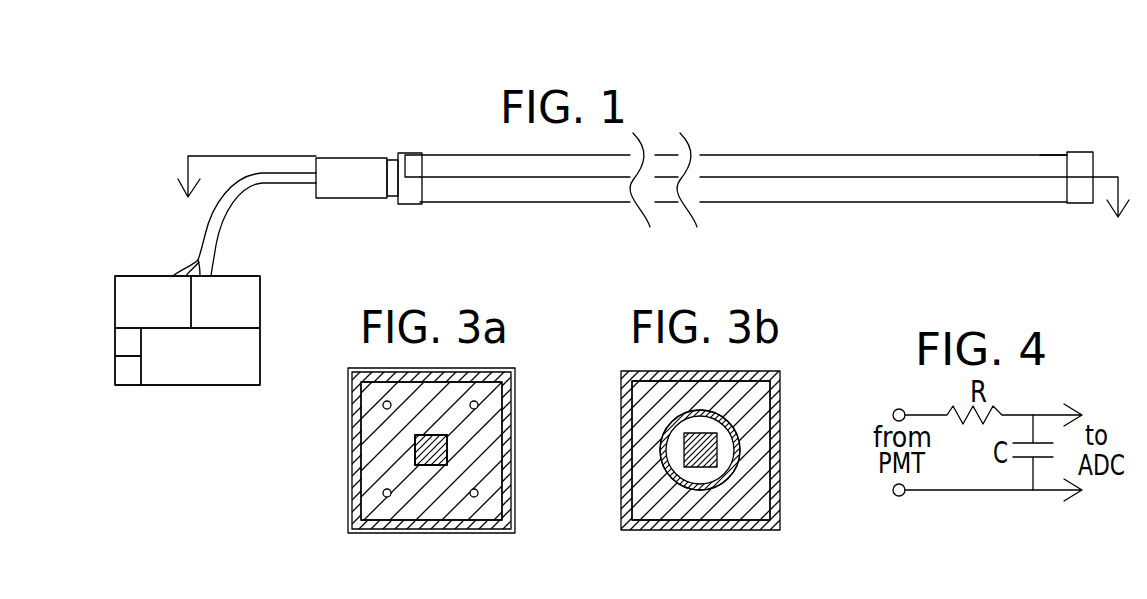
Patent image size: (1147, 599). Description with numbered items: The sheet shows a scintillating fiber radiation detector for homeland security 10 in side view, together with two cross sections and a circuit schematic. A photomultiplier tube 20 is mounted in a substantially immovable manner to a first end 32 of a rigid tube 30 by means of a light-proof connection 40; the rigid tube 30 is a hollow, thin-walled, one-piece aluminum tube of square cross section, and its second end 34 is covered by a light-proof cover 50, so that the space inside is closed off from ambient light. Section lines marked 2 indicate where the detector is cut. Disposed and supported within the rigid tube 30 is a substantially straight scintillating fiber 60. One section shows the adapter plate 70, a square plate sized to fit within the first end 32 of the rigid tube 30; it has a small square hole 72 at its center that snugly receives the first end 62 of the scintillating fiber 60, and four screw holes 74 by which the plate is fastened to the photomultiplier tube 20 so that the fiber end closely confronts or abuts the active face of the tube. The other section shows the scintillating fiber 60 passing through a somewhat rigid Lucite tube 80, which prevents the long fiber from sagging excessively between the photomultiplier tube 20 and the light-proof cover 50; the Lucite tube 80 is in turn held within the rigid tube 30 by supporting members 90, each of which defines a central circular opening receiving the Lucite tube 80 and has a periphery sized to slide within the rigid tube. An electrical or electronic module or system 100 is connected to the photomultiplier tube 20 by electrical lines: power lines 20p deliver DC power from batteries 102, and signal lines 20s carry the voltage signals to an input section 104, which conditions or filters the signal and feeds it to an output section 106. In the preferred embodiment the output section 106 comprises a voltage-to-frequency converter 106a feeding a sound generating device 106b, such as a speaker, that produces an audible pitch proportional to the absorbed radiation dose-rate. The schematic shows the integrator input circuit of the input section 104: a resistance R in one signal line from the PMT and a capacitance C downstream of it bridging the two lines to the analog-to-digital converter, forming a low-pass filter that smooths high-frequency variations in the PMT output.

In FIG. 1, the section line 2- 2 is at (653, 200).
In FIG. 1, the scintillating fiber radiation detector for homeland security 10 is at (706, 103).
In FIG. 1, the photomultiplier tube 20 is at (368, 200).
In FIG. 1, the signal lines 20s is at (185, 262).
In FIG. 1, the power lines 20p is at (212, 258).
In FIG. 1, the rigid tube 30 is at (800, 185).
In FIG. 3A, the rigid tube 30 is at (478, 525).
In FIG. 3B, the rigid tube 30 is at (780, 497).
In FIG. 1, the first end 32 is at (452, 165).
In FIG. 1, the second end 34 is at (1055, 168).
In FIG. 1, the light-proof connection 40 is at (412, 198).
In FIG. 3A, the light-proof connection 40 is at (515, 392).
In FIG. 1, the light-proof cover 50 is at (1078, 192).
In FIG. 3A, the scintillating fiber 60 is at (493, 453).
In FIG. 3B, the scintillating fiber 60 is at (703, 452).
In FIG. 3A, the first end 62 is at (447, 447).
In FIG. 3A, the adapter plate 70 is at (382, 476).
In FIG. 3A, the square hole 72 is at (420, 458).
In FIG. 3A, the screw holes 74 is at (384, 403).
In FIG. 3B, the Lucite tube 80 is at (690, 483).
In FIG. 3B, the supporting members 90 is at (745, 492).
In FIG. 1, the electrical or electronic module or system 100 is at (175, 428).
In FIG. 1, the batteries 102 is at (232, 303).
In FIG. 1, the input section 104 is at (155, 303).
In FIG. 1, the output section 106 is at (193, 360).
In FIG. 1, the voltage-to-frequency converter 106a is at (127, 338).
In FIG. 1, the sound generating device 106b is at (127, 377).